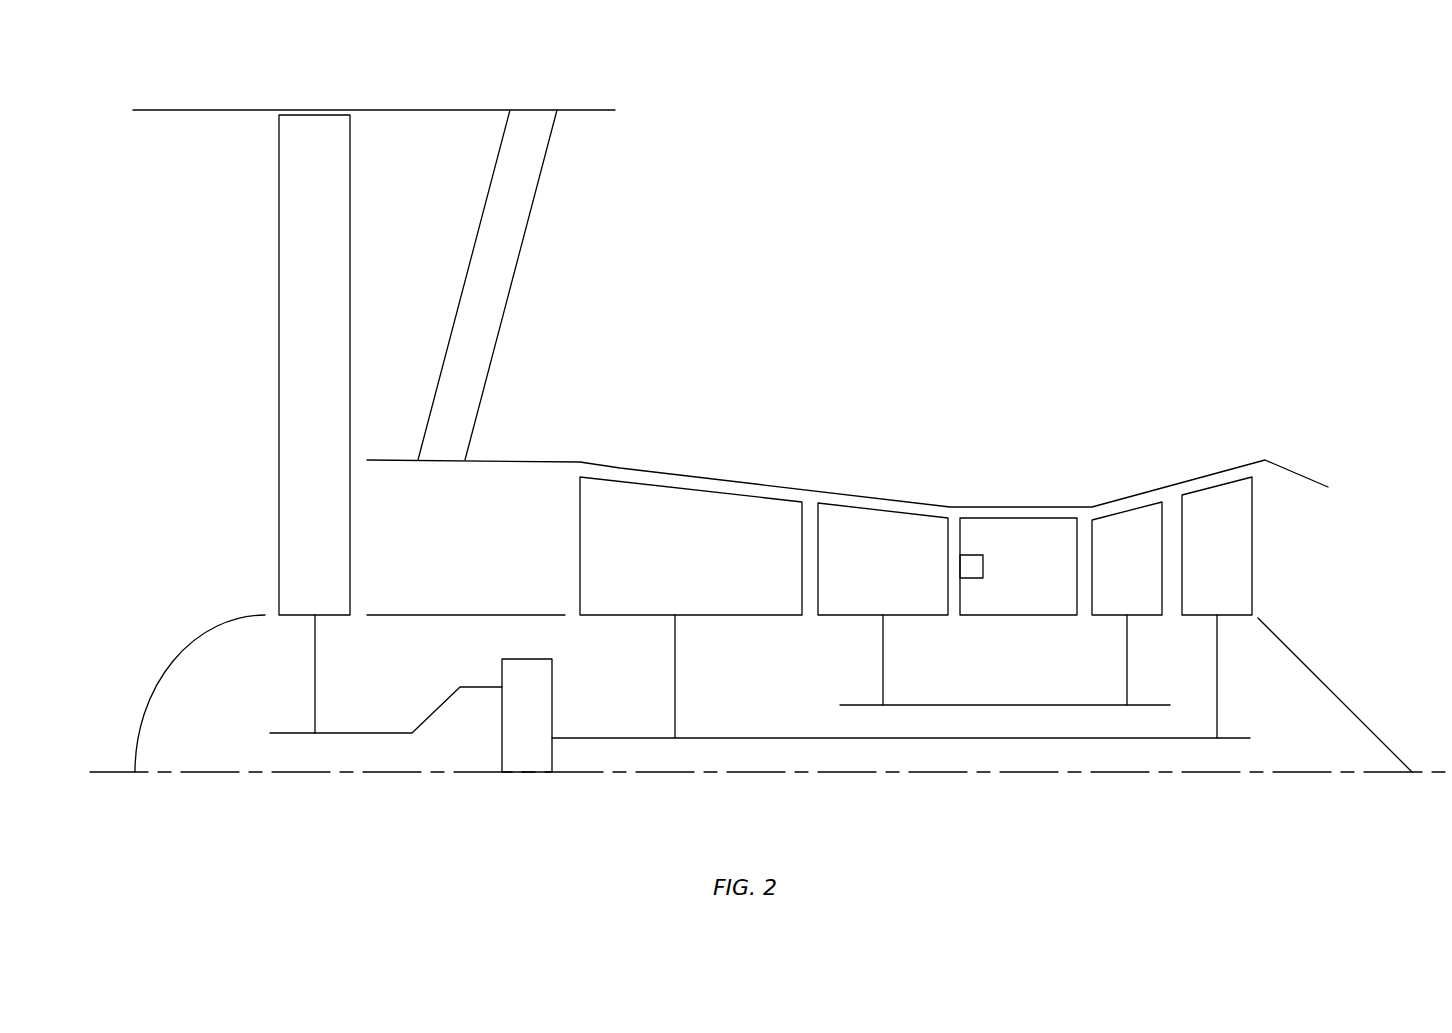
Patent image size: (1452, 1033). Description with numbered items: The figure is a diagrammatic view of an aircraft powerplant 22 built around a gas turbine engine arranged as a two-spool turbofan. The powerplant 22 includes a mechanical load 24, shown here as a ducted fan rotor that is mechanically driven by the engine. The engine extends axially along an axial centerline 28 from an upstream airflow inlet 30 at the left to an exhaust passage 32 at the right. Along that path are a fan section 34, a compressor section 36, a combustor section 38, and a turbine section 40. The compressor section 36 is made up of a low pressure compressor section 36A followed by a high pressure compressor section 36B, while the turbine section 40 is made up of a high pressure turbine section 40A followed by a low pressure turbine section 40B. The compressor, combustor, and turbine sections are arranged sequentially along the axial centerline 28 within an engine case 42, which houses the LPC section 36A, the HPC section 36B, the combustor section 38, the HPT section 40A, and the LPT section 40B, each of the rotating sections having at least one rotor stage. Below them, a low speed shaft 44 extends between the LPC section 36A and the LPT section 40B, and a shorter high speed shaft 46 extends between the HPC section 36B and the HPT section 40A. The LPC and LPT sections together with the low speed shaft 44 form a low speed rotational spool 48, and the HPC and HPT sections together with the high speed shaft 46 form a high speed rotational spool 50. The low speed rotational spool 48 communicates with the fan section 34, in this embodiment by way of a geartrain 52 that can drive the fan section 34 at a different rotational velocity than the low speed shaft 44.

The powerplant 22 is at (1125, 220).
The mechanical load 24 is at (168, 393).
The axial centerline 28 is at (1437, 768).
The upstream airflow inlet 30 is at (197, 513).
The exhaust passage 32 is at (1309, 565).
The fan section 34 is at (412, 87).
The compressor section 36 is at (948, 440).
The low pressure compressor section 36A is at (653, 565).
The high pressure compressor section 36B is at (860, 575).
The combustor section 38 is at (1020, 518).
The turbine section 40 is at (1092, 440).
The high pressure turbine section 40A is at (1105, 581).
The low pressure turbine section 40B is at (1195, 563).
The engine case 42 is at (1005, 507).
The low speed shaft 44 is at (778, 738).
The high speed shaft 46 is at (907, 705).
The low speed rotational spool 48 is at (720, 752).
The high speed rotational spool 50 is at (1027, 713).
The geartrain 52 is at (514, 731).